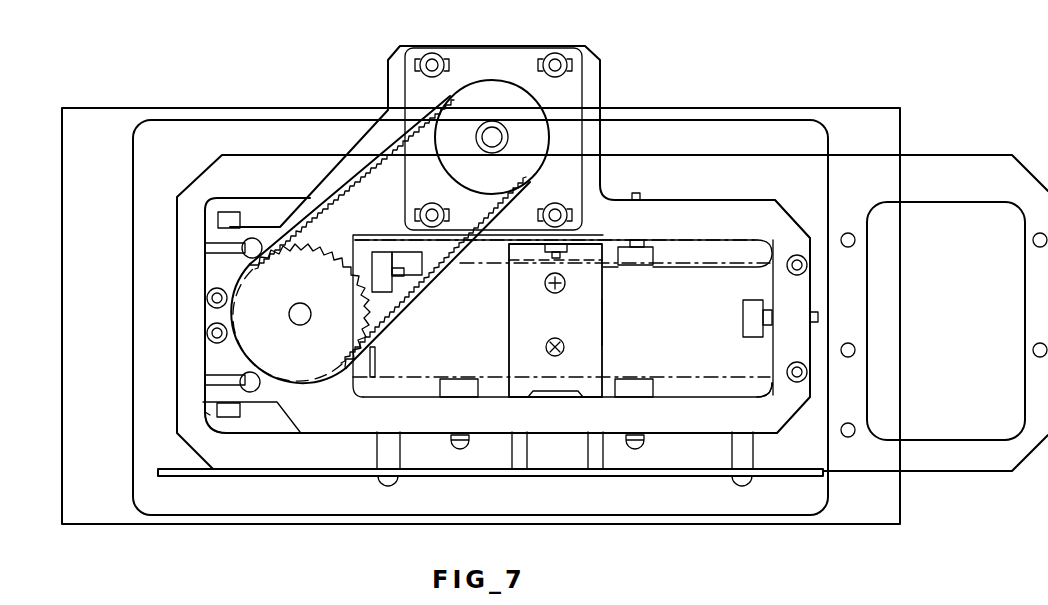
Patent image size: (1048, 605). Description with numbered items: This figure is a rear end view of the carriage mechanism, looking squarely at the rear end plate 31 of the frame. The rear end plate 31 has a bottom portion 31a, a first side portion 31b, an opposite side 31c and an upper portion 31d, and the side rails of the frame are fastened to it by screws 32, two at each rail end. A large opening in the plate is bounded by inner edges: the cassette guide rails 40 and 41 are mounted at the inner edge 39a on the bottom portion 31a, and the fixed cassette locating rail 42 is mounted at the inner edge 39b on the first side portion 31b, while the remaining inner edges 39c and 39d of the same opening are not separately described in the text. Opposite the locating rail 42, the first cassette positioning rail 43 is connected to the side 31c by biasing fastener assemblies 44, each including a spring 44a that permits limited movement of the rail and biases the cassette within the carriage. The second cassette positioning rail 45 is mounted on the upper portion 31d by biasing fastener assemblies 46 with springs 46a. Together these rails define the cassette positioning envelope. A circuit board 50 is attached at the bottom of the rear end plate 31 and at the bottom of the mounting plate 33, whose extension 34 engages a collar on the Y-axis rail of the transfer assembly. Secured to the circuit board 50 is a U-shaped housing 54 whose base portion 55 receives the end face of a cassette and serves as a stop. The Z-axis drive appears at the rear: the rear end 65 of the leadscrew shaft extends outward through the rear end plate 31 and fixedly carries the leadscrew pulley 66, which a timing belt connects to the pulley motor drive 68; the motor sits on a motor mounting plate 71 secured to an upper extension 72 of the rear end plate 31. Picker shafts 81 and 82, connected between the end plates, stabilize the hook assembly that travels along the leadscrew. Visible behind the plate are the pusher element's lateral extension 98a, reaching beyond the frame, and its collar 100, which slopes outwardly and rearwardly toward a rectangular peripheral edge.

The collar 100 is at (115, 118).
The lateral extension 98a is at (180, 135).
The rear end plate 31 is at (284, 187).
The bottom portion 31a is at (662, 424).
The first side portion 31b is at (308, 434).
The side 31c is at (800, 236).
The upper portion 31d is at (700, 203).
The screws 32 is at (207, 333).
The mounting plate 33 is at (827, 457).
The extension 34 is at (978, 468).
The inner edge 39a is at (683, 397).
The inner edge 39b is at (362, 243).
The rail end 39c is at (800, 232).
The rail end 39d is at (700, 246).
The cassette guide rail 40 is at (638, 380).
The cassette guide rail 41 is at (460, 386).
The fixed cassette locating rail 42 is at (376, 364).
The first cassette positioning rail 43 is at (743, 316).
The biasing fastener assemblies 44 is at (818, 318).
The spring 44a is at (752, 382).
The second cassette positioning rail 45 is at (652, 266).
The biasing fastener assemblies 46 is at (640, 196).
The springs 46a is at (655, 218).
The circuit board 50 is at (295, 473).
The U-shaped housing 54 is at (614, 326).
The base portion 55 is at (509, 318).
The rear end 65 is at (310, 315).
The leadscrew pulley 66 is at (325, 285).
The pulley motor drive 68 is at (505, 110).
The motor mounting plate 71 is at (500, 74).
The upper extension 72 is at (596, 66).
The picker shaft 81 is at (243, 244).
The picker shaft 82 is at (242, 380).